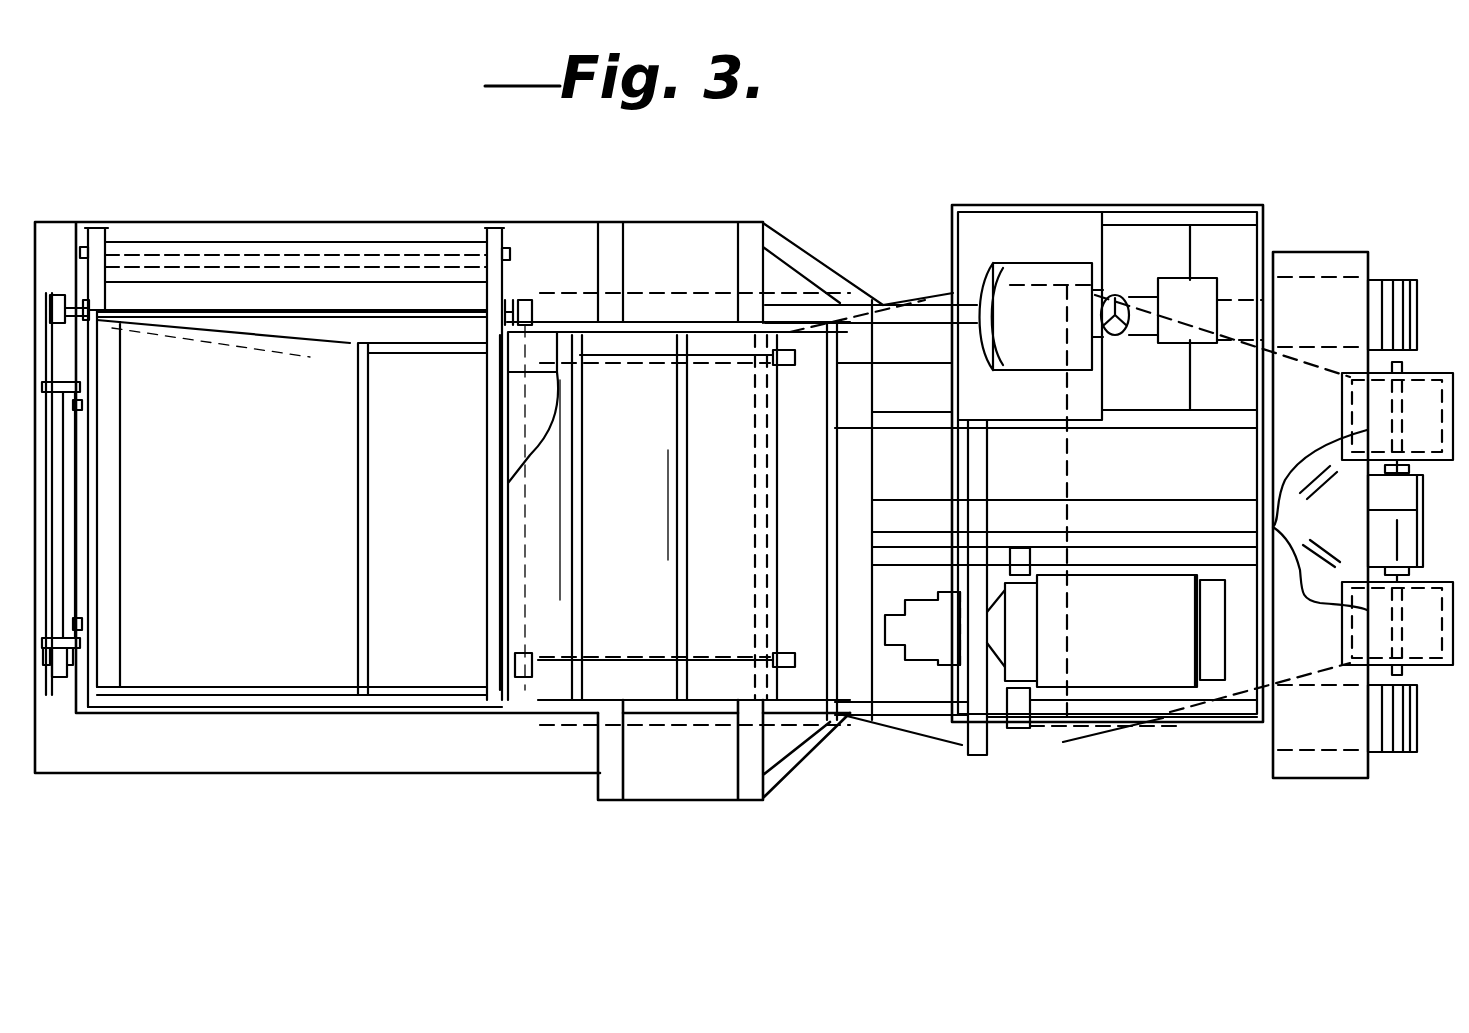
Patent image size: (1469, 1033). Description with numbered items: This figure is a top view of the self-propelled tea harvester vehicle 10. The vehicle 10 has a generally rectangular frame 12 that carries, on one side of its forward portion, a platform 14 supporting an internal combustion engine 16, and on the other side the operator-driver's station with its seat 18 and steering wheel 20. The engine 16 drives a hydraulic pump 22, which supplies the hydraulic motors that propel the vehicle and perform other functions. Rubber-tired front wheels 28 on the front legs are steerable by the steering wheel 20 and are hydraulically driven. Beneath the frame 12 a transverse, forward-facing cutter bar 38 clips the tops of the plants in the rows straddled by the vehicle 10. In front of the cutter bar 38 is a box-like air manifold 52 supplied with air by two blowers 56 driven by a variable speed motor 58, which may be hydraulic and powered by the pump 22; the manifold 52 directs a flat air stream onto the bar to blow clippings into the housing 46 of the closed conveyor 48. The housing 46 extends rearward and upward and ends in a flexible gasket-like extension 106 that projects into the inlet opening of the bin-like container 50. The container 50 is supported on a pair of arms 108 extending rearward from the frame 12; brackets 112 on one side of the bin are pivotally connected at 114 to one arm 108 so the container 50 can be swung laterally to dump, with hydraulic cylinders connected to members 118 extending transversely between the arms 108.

The self-propelled vehicle 10 is at (1110, 184).
The frame 12 is at (727, 795).
The platform 14 is at (873, 472).
The internal combustion engine 16 is at (1138, 673).
The operator-driver's seat 18 is at (1052, 272).
The steering wheel 20 is at (1113, 300).
The hydraulic pump 22 is at (927, 647).
The front wheels 28 is at (1405, 281).
The cutter bar 38 is at (990, 748).
The conveyor housing 46 is at (67, 553).
The closed conveyor 48 is at (528, 712).
The container 50 is at (265, 290).
The air manifold 52 is at (1050, 747).
The blowers 56 is at (1453, 382).
The variable speed motor 58 is at (1395, 525).
The flexible extension 106 is at (522, 328).
The arms 108 is at (372, 225).
The brackets 112 is at (497, 278).
The pivotal connection 114 is at (80, 238).
The brackets or members 118 is at (58, 690).